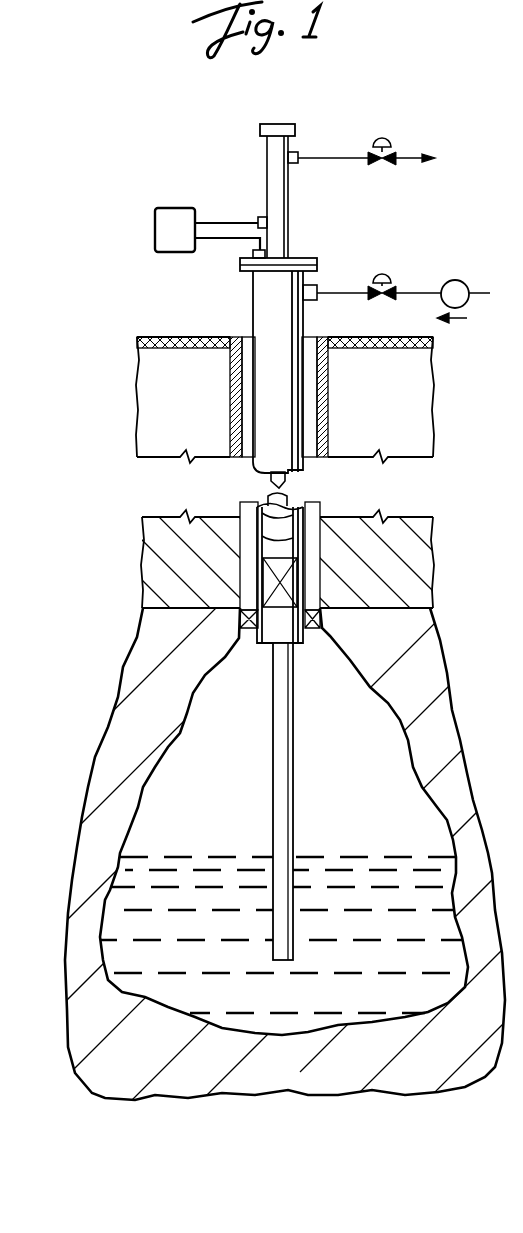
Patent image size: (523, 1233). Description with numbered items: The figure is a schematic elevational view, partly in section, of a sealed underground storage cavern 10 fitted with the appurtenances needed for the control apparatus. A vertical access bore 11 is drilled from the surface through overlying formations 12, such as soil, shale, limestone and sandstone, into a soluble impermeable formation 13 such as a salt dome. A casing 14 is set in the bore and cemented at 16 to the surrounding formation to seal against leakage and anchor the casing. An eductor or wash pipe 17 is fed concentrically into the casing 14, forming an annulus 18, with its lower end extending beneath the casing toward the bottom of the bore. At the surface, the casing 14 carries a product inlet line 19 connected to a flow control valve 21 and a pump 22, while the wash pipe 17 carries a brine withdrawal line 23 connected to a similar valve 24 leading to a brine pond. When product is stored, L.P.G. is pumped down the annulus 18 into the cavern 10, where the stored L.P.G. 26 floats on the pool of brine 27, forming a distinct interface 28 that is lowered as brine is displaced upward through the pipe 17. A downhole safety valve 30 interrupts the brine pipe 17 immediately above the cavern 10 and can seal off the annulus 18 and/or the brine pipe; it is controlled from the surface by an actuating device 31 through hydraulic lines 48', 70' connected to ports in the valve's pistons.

The underground storage cavern 10 is at (420, 742).
The vertical access bore 11 is at (317, 420).
The overlying formations 12 is at (198, 422).
The soluble impermeable formation 13 is at (417, 667).
The casing 14 is at (253, 317).
The cement 16 is at (308, 337).
The wash pipe 17 is at (288, 187).
The annulus 18 is at (297, 478).
The product inlet line 19 is at (337, 290).
The flow control valve 21 is at (393, 283).
The pump 22 is at (464, 282).
The brine withdrawal line 23 is at (323, 156).
The valve 24 is at (393, 150).
The stored L.P.G. 26 is at (232, 775).
The pool of brine 27 is at (373, 1002).
The interface 28 is at (327, 855).
The downhole safety valve 30 is at (262, 582).
The actuating device 31 is at (187, 246).
The hydraulic line 48' is at (227, 267).
The hydraulic line 70' is at (231, 196).